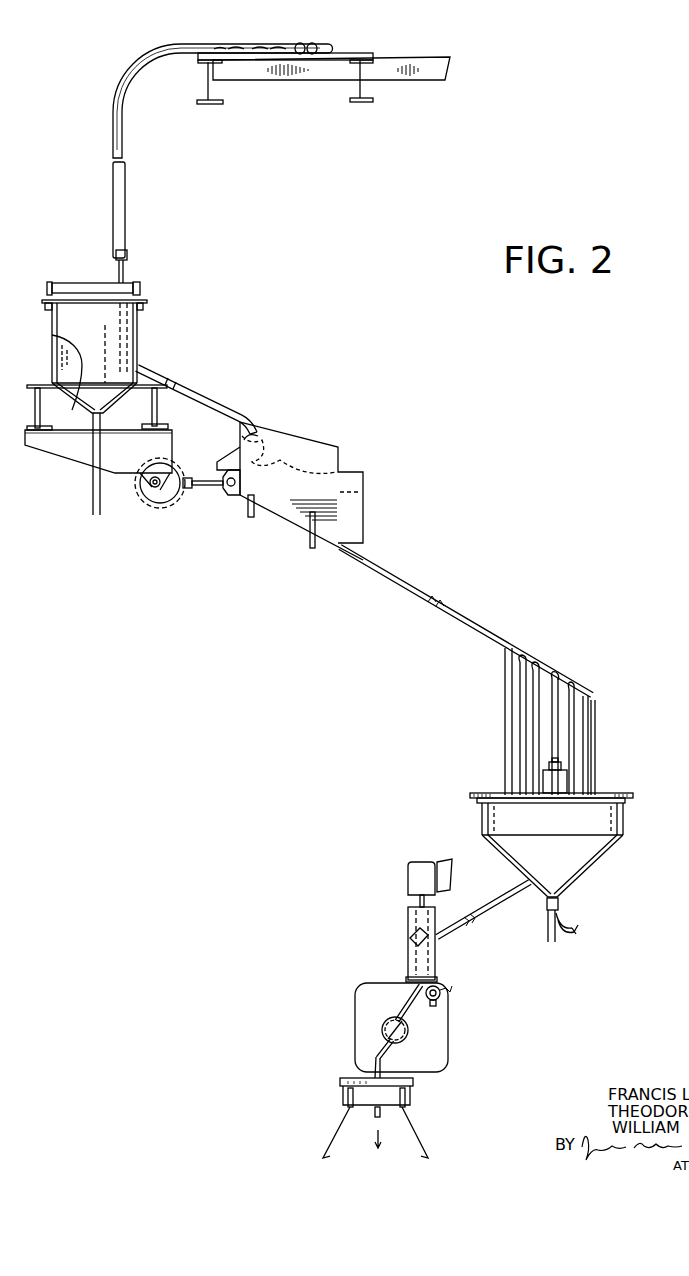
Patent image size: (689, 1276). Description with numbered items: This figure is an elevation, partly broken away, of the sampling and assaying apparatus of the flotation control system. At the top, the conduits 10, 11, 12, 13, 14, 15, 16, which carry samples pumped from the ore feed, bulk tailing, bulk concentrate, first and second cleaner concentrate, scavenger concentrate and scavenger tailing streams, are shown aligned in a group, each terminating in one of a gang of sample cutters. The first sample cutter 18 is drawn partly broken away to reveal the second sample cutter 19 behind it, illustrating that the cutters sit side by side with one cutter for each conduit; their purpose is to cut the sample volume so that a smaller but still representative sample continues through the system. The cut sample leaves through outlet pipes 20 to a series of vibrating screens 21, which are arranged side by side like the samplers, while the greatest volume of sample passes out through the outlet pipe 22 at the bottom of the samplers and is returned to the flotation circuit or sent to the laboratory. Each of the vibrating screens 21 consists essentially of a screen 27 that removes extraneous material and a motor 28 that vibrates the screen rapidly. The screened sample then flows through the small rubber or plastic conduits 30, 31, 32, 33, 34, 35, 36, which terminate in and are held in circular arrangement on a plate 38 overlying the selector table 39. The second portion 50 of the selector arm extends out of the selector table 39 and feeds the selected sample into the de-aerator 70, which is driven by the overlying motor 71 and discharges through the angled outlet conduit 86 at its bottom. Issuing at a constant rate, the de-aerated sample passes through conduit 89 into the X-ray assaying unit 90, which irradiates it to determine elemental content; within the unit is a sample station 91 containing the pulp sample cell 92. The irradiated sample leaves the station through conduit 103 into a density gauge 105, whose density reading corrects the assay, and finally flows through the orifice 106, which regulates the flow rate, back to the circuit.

The conduit 10 is at (117, 103).
The conduit 11 is at (312, 44).
The conduit 12 is at (300, 44).
The conduit 13 is at (264, 47).
The conduit 14 is at (277, 47).
The conduit 15 is at (220, 47).
The conduit 16 is at (236, 47).
The first sample cutter 18 is at (70, 312).
The second sample cutter 19 is at (63, 367).
The outlet pipes 20 is at (205, 388).
The vibrating screens 21 is at (325, 447).
The outlet pipe 22 is at (96, 489).
The screen 27 is at (245, 434).
The motor 28 is at (166, 508).
The conduit 30 is at (395, 576).
The conduit 31 is at (578, 690).
The conduit 32 is at (593, 695).
The conduit 33 is at (596, 720).
The conduit 34 is at (538, 670).
The conduit 35 is at (526, 658).
The conduit 36 is at (505, 670).
The plate 38 is at (607, 793).
The selector table 39 is at (620, 823).
The second portion of the selector arm 50 is at (503, 896).
The de-aerator 70 is at (430, 913).
The motor 71 is at (412, 870).
The outlet conduit 86 is at (410, 976).
The conduit 89 is at (402, 1005).
The X-ray assaying unit 90 is at (364, 1018).
The sample station 91 is at (382, 1030).
The pulp sample cell 92 is at (408, 1032).
The outlet conduit 103 is at (370, 1056).
The density gauge 105 is at (410, 1086).
The orifice 106 is at (382, 1110).